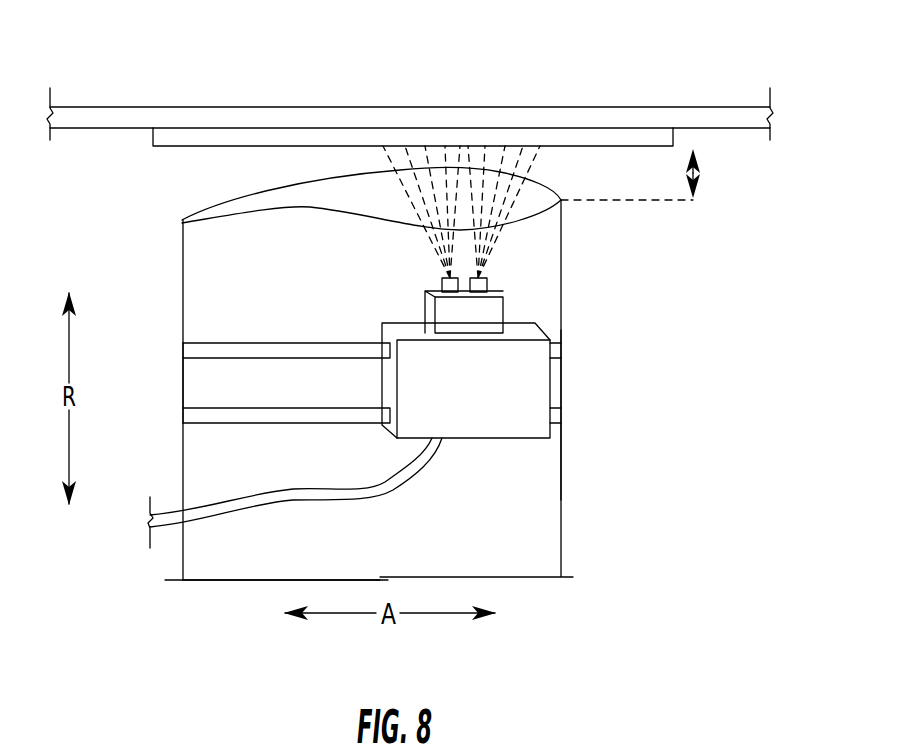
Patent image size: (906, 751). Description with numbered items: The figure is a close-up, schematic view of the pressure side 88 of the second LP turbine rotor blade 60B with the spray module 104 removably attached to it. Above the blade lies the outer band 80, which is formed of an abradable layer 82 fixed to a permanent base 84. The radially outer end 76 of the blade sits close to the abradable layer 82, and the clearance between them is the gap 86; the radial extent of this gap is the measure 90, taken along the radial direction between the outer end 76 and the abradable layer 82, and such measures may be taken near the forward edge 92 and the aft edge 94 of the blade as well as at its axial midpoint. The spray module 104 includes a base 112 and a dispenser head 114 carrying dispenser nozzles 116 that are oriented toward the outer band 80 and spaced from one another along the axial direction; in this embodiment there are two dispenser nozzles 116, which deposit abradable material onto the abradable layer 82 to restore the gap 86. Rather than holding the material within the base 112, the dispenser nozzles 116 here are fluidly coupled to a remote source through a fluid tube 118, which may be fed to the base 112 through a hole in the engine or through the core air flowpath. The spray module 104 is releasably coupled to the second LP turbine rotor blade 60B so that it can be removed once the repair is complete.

The outer band 80 is at (489, 59).
The abradable layer 82 is at (192, 130).
The permanent base 84 is at (688, 107).
The gap 86 is at (369, 156).
The radially outer end 76 is at (217, 199).
The measure of the gap 90 is at (698, 173).
The forward edge 92 is at (569, 430).
The aft edge 94 is at (167, 479).
The spray module 104 is at (555, 333).
The base 112 is at (493, 399).
The dispenser head 114 is at (425, 318).
The dispenser nozzles 116 is at (440, 286).
The fluid tube 118 is at (290, 489).
The pressure side 88 is at (266, 564).
The second LP turbine rotor blade 60B is at (553, 494).